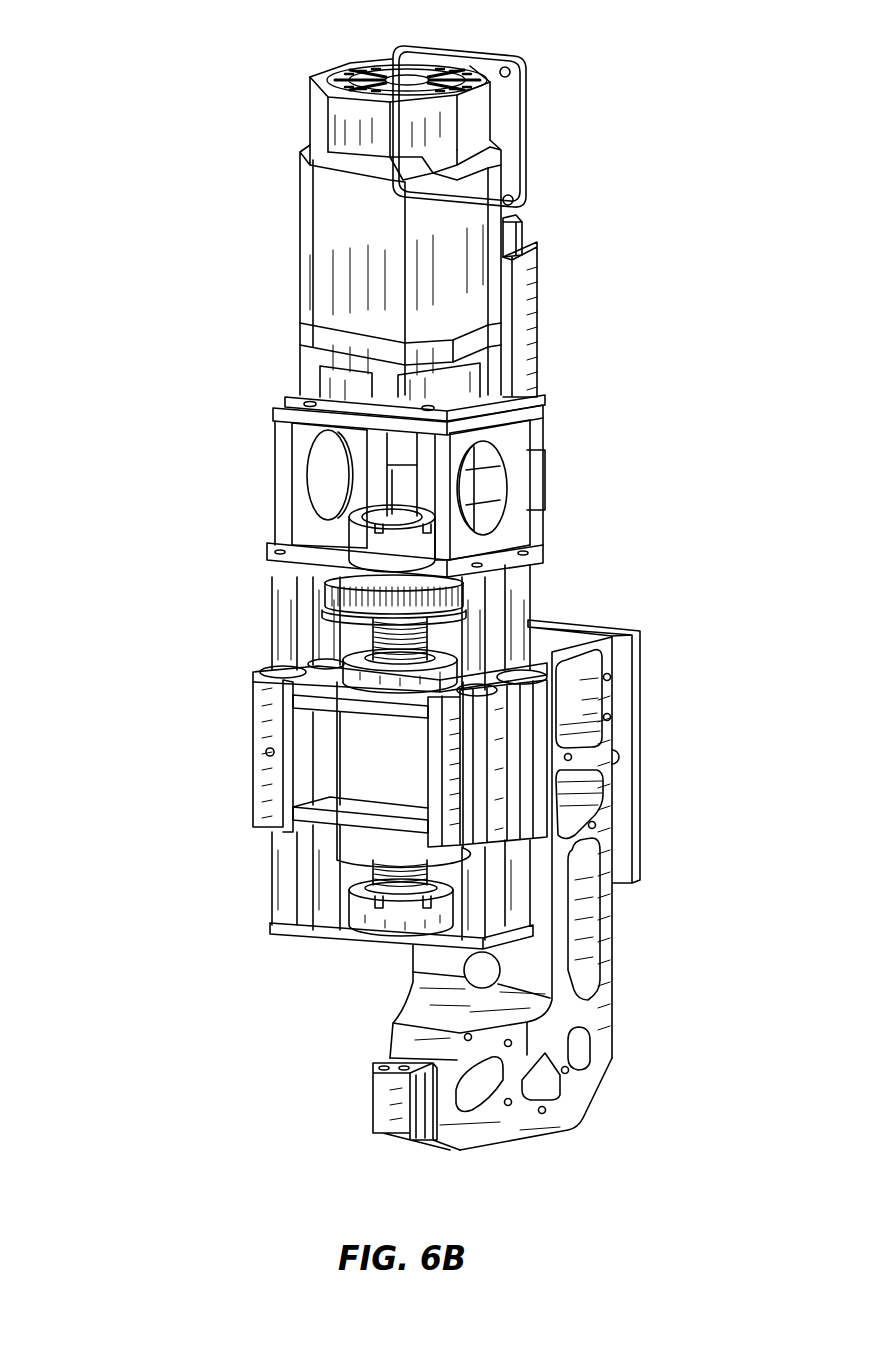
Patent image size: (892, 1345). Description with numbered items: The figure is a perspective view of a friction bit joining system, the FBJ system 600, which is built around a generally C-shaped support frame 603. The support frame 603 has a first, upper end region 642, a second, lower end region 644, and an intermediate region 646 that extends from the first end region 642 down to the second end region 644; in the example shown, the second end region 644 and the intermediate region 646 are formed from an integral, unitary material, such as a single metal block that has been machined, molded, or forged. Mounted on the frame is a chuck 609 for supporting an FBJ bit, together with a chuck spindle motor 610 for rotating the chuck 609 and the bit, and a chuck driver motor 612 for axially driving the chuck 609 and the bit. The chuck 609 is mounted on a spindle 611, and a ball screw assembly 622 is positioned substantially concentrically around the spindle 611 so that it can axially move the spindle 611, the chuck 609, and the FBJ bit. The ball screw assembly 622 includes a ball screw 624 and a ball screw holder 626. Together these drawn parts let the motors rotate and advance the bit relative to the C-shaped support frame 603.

The FBJ system 600 is at (136, 86).
The chuck spindle motor 610 is at (282, 236).
The chuck driver motor 612 is at (568, 335).
The spindle 611 is at (395, 493).
The first end region 642 is at (560, 598).
The support frame 603 is at (698, 642).
The ball screw assembly 622 is at (222, 664).
The ball screw holder 626 is at (360, 677).
The ball screw 624 is at (345, 862).
The chuck 609 is at (318, 955).
The intermediate region 646 is at (640, 908).
The second end region 644 is at (392, 1166).